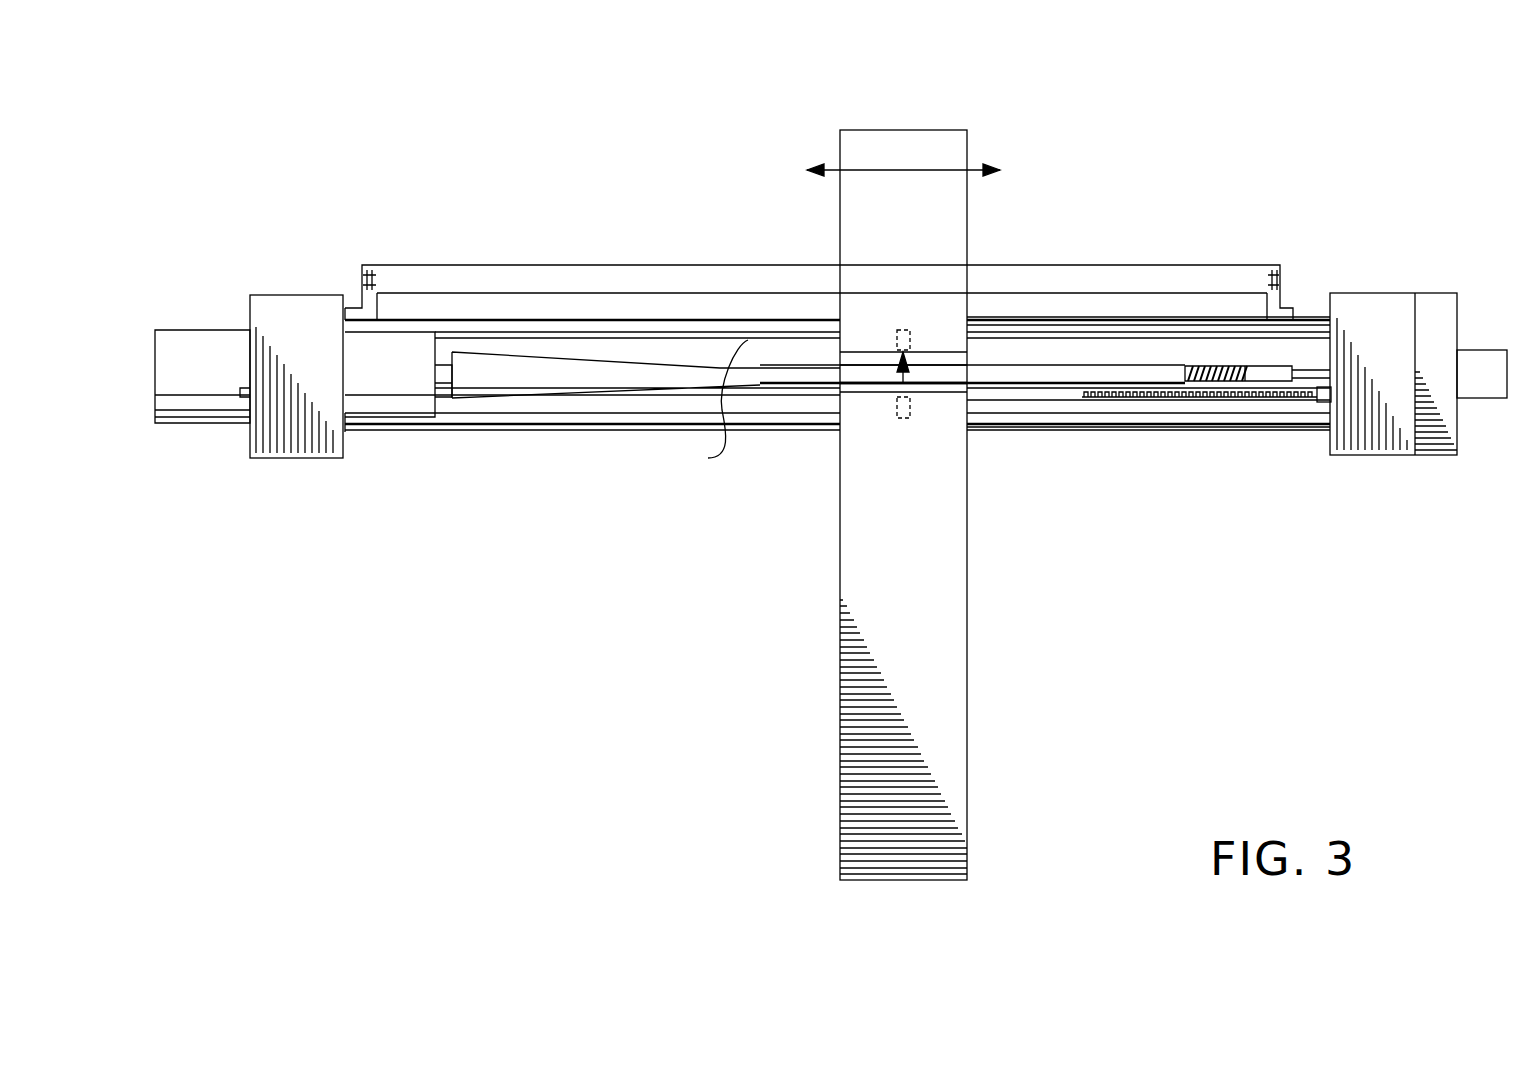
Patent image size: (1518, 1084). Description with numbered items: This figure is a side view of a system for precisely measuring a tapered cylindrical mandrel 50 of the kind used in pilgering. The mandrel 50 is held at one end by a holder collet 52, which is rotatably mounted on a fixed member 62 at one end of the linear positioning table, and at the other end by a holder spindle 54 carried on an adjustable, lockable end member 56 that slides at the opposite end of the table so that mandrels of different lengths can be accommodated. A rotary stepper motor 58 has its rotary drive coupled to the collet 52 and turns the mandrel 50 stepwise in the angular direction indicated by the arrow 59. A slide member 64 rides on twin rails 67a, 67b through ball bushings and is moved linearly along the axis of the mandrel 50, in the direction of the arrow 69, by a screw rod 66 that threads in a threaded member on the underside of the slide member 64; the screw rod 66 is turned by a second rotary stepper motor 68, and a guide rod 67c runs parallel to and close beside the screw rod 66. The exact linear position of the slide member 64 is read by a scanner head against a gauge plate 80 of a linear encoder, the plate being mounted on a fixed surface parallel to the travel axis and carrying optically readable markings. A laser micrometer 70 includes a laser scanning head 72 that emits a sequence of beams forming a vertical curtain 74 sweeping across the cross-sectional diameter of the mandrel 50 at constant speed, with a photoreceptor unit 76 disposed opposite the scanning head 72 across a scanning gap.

The mandrel 50 is at (648, 405).
The holder collet 52 is at (403, 398).
The holder spindle 54 is at (1305, 400).
The end member 56 is at (1435, 455).
The rotary stepper motor 58 is at (230, 338).
The arrow 59 is at (750, 392).
The fixed member 62 is at (290, 458).
The slide member 64 is at (840, 253).
The screw rod 66 is at (1265, 373).
The rail 67a is at (1142, 422).
The rail 67b is at (1308, 327).
The guide rod 67c is at (1035, 396).
The rotary stepper motor 68 is at (1480, 397).
The arrow 69 is at (955, 170).
The laser micrometer 70 is at (1000, 498).
The laser scanning head 72 is at (905, 420).
The vertical curtain 74 is at (925, 385).
The photoreceptor unit 76 is at (903, 330).
The gauge plate 80 is at (1225, 268).